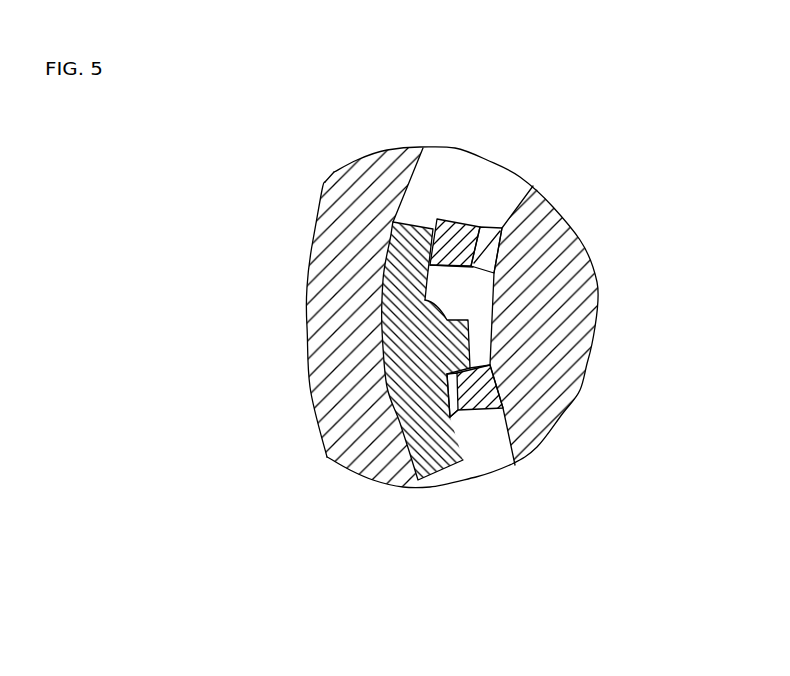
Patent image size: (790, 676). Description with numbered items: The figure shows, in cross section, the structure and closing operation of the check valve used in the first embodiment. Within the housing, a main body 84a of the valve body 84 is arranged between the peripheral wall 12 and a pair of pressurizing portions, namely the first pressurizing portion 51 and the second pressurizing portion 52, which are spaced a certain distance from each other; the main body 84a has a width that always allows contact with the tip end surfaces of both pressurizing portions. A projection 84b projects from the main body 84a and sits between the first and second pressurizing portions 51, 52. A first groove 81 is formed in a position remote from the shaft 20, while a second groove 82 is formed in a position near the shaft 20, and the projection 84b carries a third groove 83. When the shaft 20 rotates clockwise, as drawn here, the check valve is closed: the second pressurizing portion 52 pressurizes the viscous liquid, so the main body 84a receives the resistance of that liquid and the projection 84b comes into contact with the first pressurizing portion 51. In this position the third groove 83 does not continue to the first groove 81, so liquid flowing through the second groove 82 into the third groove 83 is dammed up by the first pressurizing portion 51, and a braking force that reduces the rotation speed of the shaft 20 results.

The peripheral wall 12 is at (327, 221).
The shaft 20 is at (565, 240).
The valve body 84 is at (343, 289).
The main body 84a is at (400, 267).
The projection 84b is at (440, 301).
The third groove 83 is at (480, 343).
The second pressurizing portion 52 is at (461, 223).
The second groove 82 is at (488, 227).
The first pressurizing portion 51 is at (503, 408).
The first groove 81 is at (450, 417).